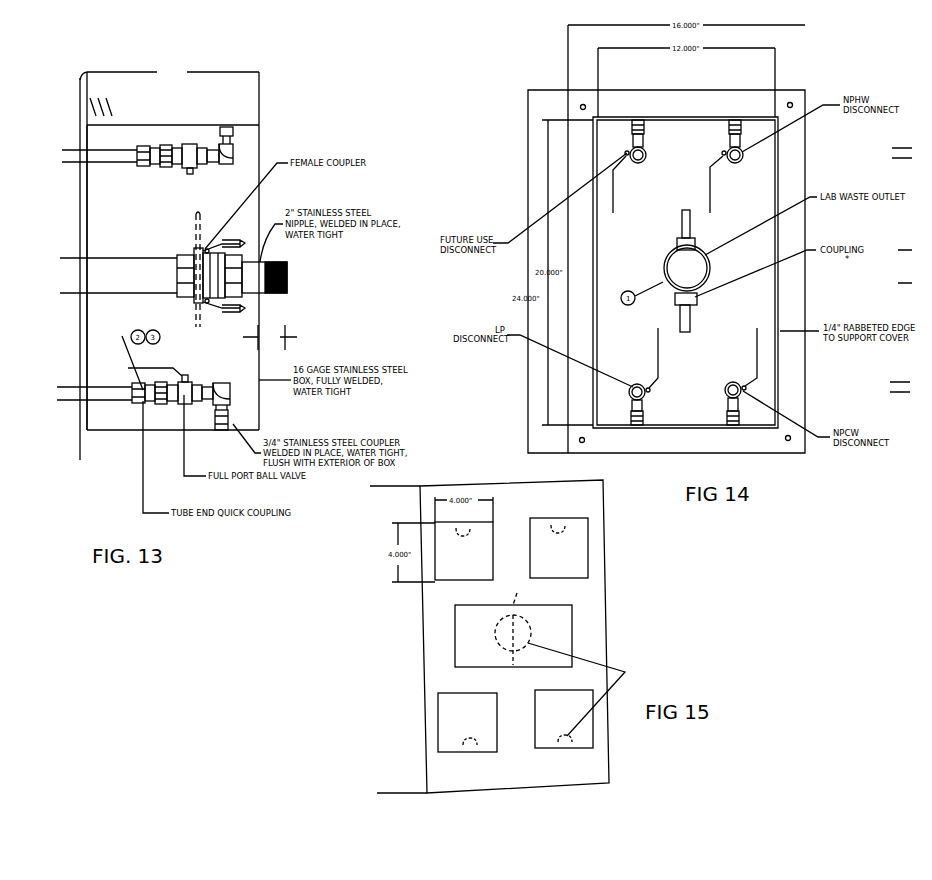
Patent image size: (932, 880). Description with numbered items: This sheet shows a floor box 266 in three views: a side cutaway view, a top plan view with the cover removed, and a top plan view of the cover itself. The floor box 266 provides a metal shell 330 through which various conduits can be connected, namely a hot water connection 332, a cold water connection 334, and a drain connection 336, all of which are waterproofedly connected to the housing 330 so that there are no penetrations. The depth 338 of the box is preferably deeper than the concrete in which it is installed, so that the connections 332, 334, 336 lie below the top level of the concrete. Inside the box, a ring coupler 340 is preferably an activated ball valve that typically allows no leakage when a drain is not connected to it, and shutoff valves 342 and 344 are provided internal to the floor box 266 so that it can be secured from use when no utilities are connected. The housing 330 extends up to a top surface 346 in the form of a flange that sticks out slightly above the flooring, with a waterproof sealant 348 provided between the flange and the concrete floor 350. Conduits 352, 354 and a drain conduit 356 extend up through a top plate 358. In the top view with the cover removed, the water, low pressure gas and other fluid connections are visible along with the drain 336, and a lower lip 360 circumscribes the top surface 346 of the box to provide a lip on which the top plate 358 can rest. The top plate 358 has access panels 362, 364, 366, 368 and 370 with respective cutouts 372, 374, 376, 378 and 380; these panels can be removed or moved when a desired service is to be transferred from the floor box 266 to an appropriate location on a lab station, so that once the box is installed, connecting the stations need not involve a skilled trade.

In FIG. 14, the floor box 266 is at (800, 466).
In FIG. 13, the metal shell 330 is at (173, 124).
In FIG. 13, the hot water connection 332 is at (217, 125).
In FIG. 13, the cold water connection 334 is at (222, 422).
In FIG. 13, the drain connection 336 is at (248, 263).
In FIG. 13, the depth 338 is at (173, 64).
In FIG. 13, the ring coupler 340 is at (182, 244).
In FIG. 13, the shutoff valve 342 is at (148, 193).
In FIG. 13, the shutoff valve 344 is at (185, 373).
In FIG. 13, the top surface 346 is at (72, 110).
In FIG. 14, the top surface 346 is at (666, 97).
In FIG. 13, the waterproof sealant 348 is at (85, 80).
In FIG. 13, the concrete floor 350 is at (115, 100).
In FIG. 13, the conduit 352 is at (188, 174).
In FIG. 13, the conduit 354 is at (95, 387).
In FIG. 13, the drain conduit 356 is at (147, 273).
In FIG. 13, the top plate 358 is at (78, 336).
In FIG. 15, the top plate 358 is at (587, 505).
In FIG. 14, the lower lip 360 is at (595, 250).
In FIG. 15, the access panel 362 is at (580, 560).
In FIG. 15, the access panel 364 is at (452, 572).
In FIG. 13, the access panel 366 is at (44, 233).
In FIG. 15, the access panel 366 is at (567, 633).
In FIG. 15, the access panel 368 is at (460, 710).
In FIG. 15, the access panel 370 is at (577, 700).
In FIG. 15, the cutout 372 is at (557, 522).
In FIG. 15, the cutout 374 is at (462, 522).
In FIG. 15, the cutout 376 is at (510, 637).
In FIG. 15, the cutout 378 is at (468, 750).
In FIG. 15, the cutout 380 is at (565, 745).